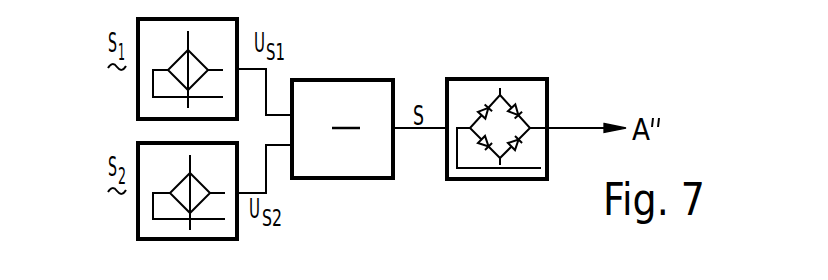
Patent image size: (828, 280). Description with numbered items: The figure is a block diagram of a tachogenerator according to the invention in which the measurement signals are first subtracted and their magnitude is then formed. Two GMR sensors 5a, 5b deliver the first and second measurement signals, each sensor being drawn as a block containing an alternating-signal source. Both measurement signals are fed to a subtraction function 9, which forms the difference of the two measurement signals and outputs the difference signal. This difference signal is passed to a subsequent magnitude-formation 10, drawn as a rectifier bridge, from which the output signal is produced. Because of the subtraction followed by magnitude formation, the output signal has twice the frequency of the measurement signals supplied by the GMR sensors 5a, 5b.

The GMR sensor 5a is at (138, 93).
The GMR sensor 5b is at (138, 215).
The subtraction function 9 is at (366, 80).
The magnitude-formation 10 is at (512, 79).